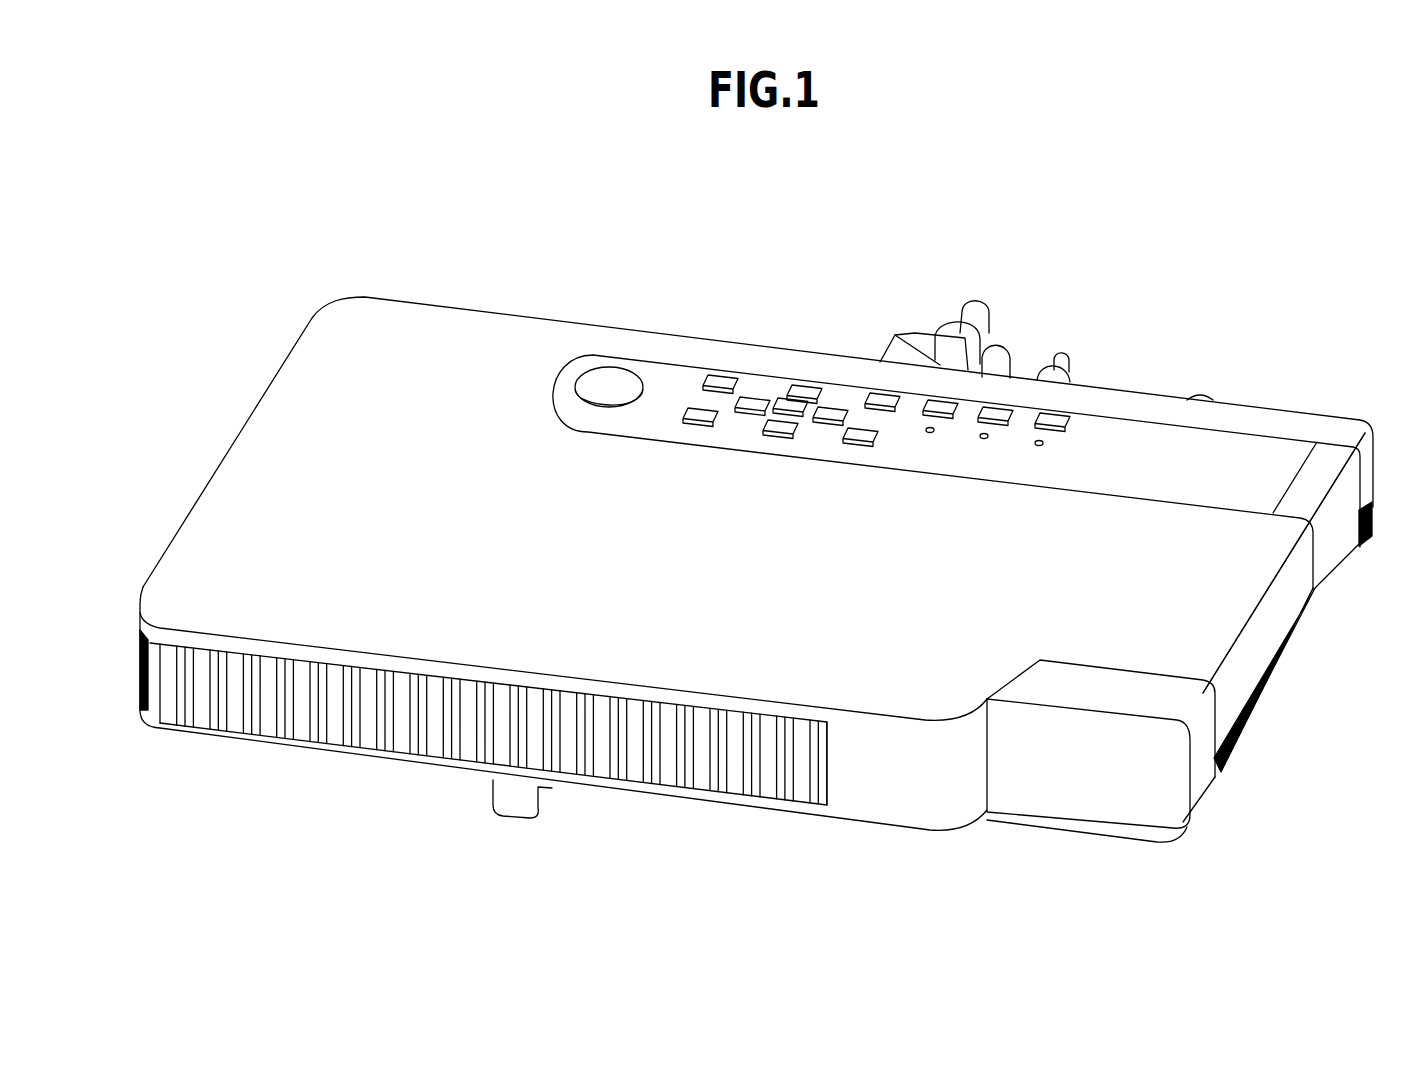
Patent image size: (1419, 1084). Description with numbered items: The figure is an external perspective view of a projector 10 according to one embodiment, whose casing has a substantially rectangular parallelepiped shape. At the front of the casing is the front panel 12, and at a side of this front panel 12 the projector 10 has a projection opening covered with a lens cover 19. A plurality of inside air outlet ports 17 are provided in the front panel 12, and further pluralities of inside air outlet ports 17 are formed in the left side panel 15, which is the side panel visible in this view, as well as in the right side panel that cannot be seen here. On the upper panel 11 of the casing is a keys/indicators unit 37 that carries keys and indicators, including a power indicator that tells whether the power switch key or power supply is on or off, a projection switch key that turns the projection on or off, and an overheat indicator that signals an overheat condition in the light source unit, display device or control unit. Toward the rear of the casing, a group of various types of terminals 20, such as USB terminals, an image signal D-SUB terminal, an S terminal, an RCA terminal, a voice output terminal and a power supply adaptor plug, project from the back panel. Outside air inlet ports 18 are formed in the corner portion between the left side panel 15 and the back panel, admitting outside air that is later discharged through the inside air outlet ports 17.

The projector 10 is at (846, 211).
The upper panel 11 is at (503, 330).
The front panel 12 is at (865, 773).
The left side panel 15 is at (1252, 653).
The inside air outlet ports 17 is at (757, 788).
The outside air inlet ports 18 is at (1373, 513).
The lens cover 19 is at (1093, 785).
The terminals 20 is at (1006, 332).
The keys/indicators unit 37 is at (764, 373).